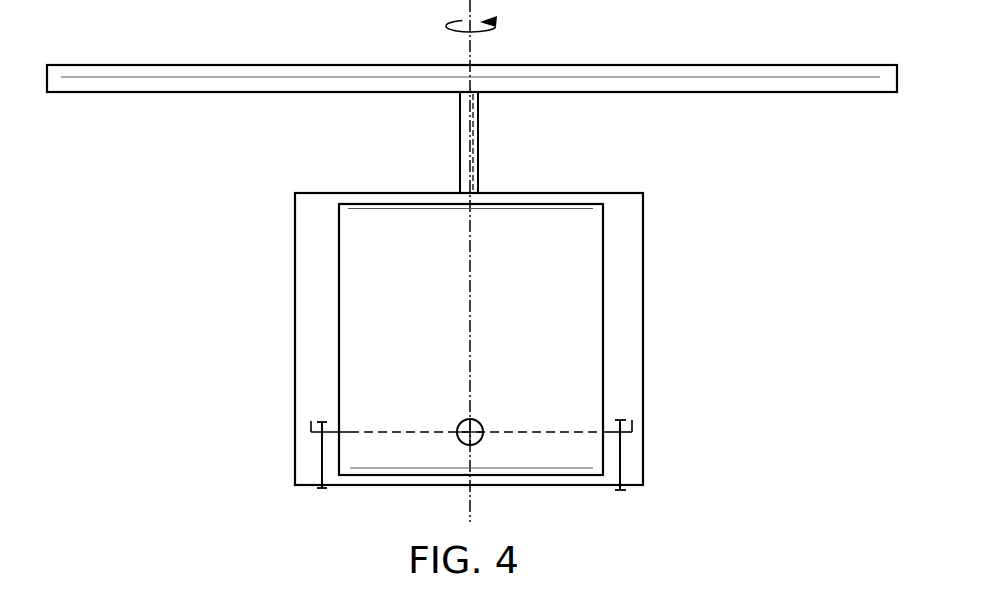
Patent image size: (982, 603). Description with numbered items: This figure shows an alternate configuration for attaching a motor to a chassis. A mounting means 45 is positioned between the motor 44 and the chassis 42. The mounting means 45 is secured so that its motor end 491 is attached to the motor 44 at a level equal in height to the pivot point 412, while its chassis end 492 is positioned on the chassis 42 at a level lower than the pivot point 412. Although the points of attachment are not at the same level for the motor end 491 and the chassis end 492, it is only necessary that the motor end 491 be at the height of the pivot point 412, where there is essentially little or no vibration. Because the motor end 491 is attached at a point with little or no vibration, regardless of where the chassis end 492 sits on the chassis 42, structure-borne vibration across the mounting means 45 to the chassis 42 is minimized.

The chassis 42 is at (295, 263).
The motor 44 is at (604, 370).
The mounting means 45 is at (633, 427).
The pivot point 412 is at (479, 421).
The motor end 491 is at (332, 430).
The chassis end 492 is at (318, 490).